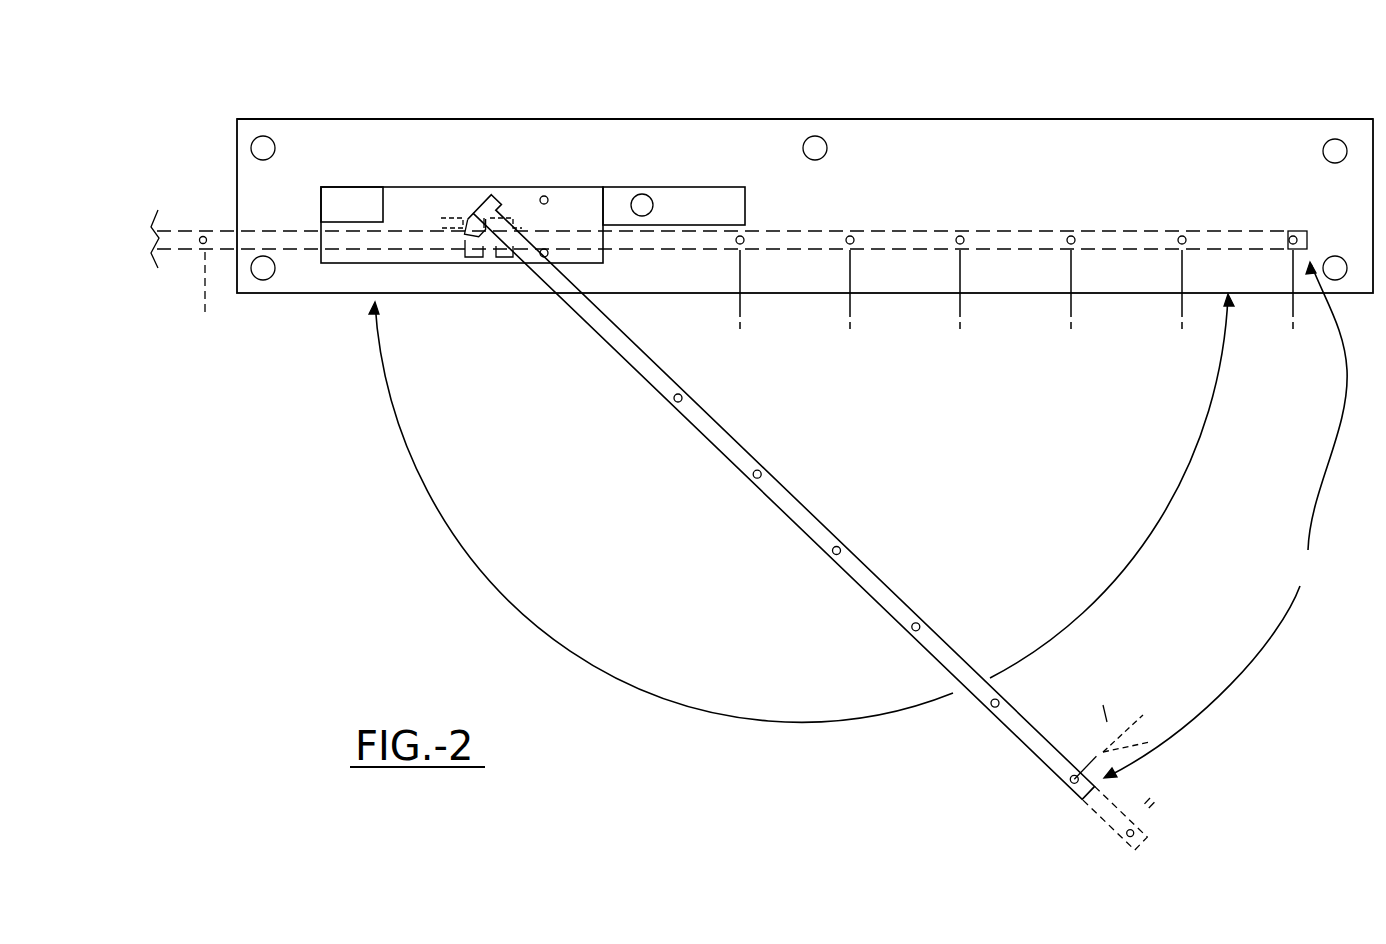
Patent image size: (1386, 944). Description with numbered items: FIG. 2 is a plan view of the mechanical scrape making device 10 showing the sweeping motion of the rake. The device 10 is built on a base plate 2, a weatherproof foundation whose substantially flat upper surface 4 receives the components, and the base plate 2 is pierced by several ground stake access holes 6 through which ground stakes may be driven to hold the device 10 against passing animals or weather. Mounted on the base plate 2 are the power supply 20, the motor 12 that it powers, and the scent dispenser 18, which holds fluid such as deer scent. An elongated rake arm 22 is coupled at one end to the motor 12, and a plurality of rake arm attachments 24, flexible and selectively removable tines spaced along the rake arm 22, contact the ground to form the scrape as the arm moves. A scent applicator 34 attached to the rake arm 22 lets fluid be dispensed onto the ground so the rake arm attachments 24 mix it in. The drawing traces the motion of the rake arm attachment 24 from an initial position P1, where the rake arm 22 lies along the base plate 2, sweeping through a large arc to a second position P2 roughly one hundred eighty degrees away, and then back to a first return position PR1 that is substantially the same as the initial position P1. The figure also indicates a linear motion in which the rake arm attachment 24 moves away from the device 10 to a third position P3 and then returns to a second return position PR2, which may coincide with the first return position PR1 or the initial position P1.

The base plate 2 is at (967, 159).
The upper surface 4 is at (565, 118).
The ground stake access hole 6 is at (265, 137).
The mechanical scrape making device 10 is at (1141, 81).
The motor 12 is at (429, 197).
The scent dispenser 18 is at (677, 197).
The power supply 20 is at (340, 215).
The rake arm 22 is at (1046, 753).
The rake arm attachment 24 is at (678, 398).
The scent applicator 34 is at (1096, 756).
The initial position P1 is at (743, 297).
The second position P2 is at (166, 266).
The third position P3 is at (1160, 836).
The first return position PR1 is at (823, 489).
The second return position PR2 is at (1225, 520).